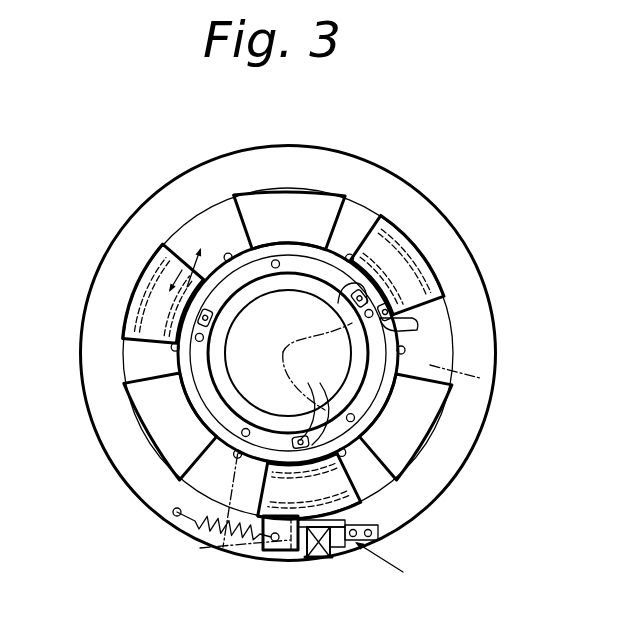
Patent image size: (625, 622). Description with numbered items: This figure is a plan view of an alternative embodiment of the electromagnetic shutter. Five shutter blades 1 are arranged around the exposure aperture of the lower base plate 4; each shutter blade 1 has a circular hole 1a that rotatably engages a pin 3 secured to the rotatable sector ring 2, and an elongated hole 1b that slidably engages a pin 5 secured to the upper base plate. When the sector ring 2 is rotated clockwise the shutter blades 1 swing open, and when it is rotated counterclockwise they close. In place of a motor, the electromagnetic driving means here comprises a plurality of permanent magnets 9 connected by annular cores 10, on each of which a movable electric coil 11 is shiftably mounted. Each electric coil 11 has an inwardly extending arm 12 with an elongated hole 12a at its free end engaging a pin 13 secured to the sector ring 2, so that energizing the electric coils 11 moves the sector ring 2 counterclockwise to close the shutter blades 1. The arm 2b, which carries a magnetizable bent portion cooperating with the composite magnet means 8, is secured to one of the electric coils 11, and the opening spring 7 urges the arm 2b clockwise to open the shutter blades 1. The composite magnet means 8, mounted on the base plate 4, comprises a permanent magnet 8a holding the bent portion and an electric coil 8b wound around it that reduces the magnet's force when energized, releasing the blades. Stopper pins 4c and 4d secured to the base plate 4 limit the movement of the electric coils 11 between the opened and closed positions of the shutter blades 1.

The shutter blade 1 is at (478, 378).
The circular hole 1a is at (395, 297).
The elongated hole 1b is at (432, 327).
The sector ring 2 is at (315, 265).
The arm 2b is at (275, 552).
The pin 3 is at (281, 259).
The lower base plate 4 is at (423, 207).
The stopper pin 4c is at (352, 256).
The stopper pin 4d is at (228, 253).
The pin 5 is at (410, 310).
The opening spring 7 is at (225, 548).
The composite magnet means 8 is at (360, 557).
The permanent magnet 8a is at (360, 548).
The electric coil 8b is at (318, 558).
The permanent magnet 9 is at (285, 198).
The annular core 10 is at (202, 245).
The movable electric coil 11 is at (147, 290).
The arm 12 is at (232, 300).
The elongated hole 12a is at (212, 318).
The pin 13 is at (215, 326).